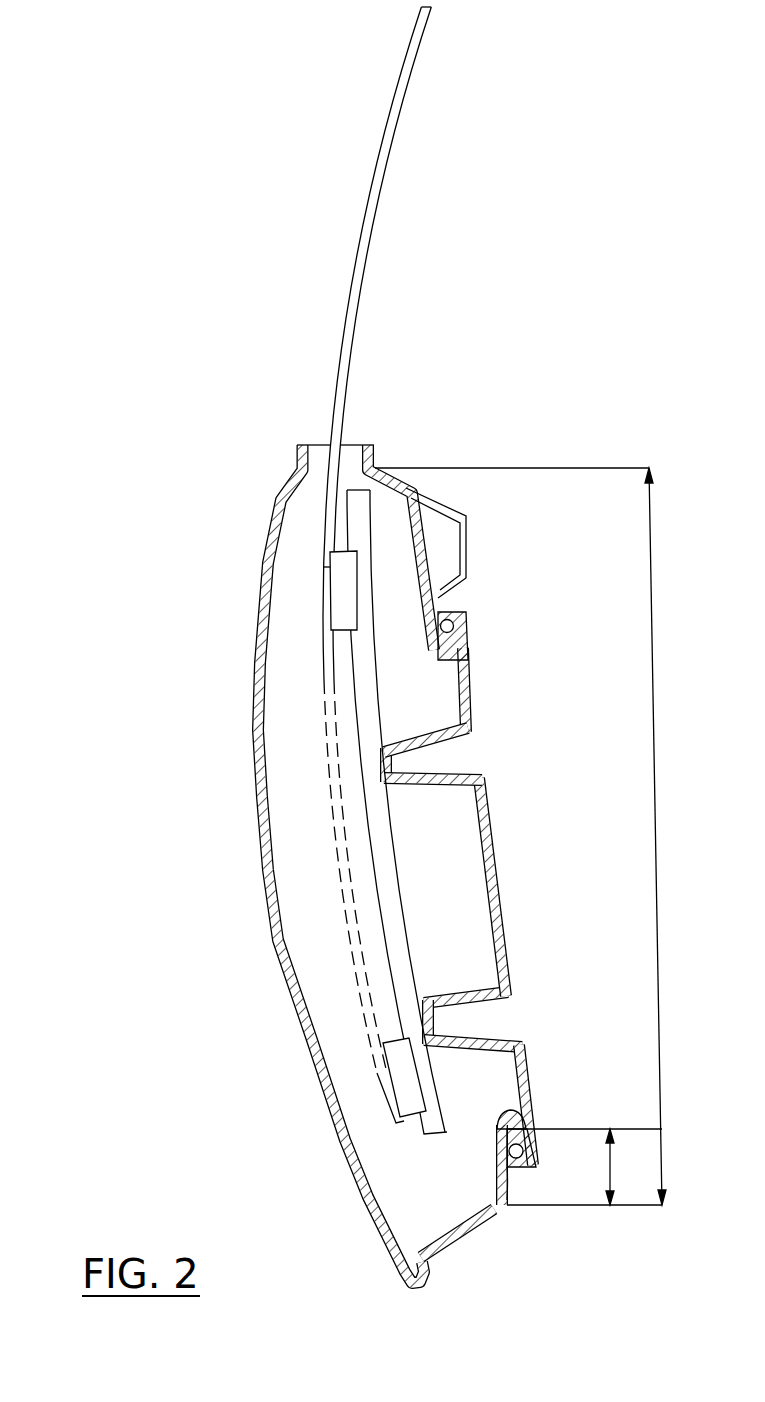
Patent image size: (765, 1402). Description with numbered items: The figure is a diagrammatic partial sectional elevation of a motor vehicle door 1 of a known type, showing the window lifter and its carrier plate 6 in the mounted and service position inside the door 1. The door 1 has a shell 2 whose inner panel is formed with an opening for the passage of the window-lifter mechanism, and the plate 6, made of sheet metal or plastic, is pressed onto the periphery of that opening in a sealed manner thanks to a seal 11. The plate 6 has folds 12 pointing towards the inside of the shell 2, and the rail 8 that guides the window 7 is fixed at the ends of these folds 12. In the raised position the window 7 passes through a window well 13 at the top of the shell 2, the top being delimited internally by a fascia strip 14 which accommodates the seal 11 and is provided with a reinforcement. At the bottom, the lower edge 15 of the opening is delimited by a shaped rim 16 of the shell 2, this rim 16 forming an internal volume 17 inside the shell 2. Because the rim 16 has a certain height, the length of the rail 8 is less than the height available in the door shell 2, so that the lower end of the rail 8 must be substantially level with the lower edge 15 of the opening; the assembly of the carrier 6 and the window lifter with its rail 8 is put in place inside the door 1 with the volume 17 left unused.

The motor vehicle door 1 is at (165, 741).
The shell 2 is at (487, 1218).
The carrier plate 6 is at (512, 888).
The window 7 is at (368, 242).
The rail 8 is at (393, 876).
The seal 11 is at (453, 627).
The folds 12 is at (445, 772).
The window well 13 is at (343, 444).
The fascia strip 14 is at (443, 596).
The lower edge 15 is at (503, 1112).
The shaped rim 16 is at (508, 1190).
The internal volume 17 is at (432, 1207).